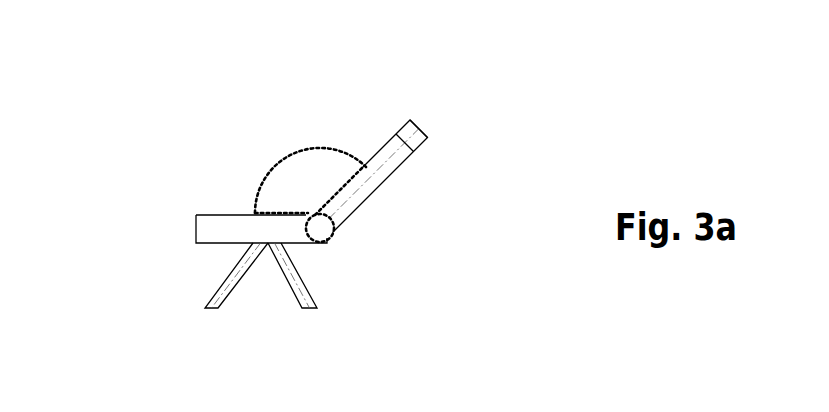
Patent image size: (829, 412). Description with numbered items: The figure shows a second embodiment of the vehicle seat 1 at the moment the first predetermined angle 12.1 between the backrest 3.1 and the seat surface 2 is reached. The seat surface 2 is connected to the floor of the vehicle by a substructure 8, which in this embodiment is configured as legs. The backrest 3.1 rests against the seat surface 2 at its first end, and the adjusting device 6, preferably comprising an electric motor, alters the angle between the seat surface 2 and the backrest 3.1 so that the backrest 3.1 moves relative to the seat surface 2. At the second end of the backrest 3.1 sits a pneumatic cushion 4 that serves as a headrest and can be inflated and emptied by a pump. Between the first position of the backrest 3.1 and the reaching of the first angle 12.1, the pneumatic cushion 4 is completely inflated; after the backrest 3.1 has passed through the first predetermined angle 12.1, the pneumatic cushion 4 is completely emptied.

The vehicle seat 1 is at (165, 128).
The seat surface 2 is at (203, 233).
The backrest 3.1 is at (368, 198).
The pneumatic cushion 4 is at (407, 130).
The adjusting device 6 is at (325, 232).
The substructure 8 is at (223, 293).
The first predetermined angle 12.1 is at (292, 152).